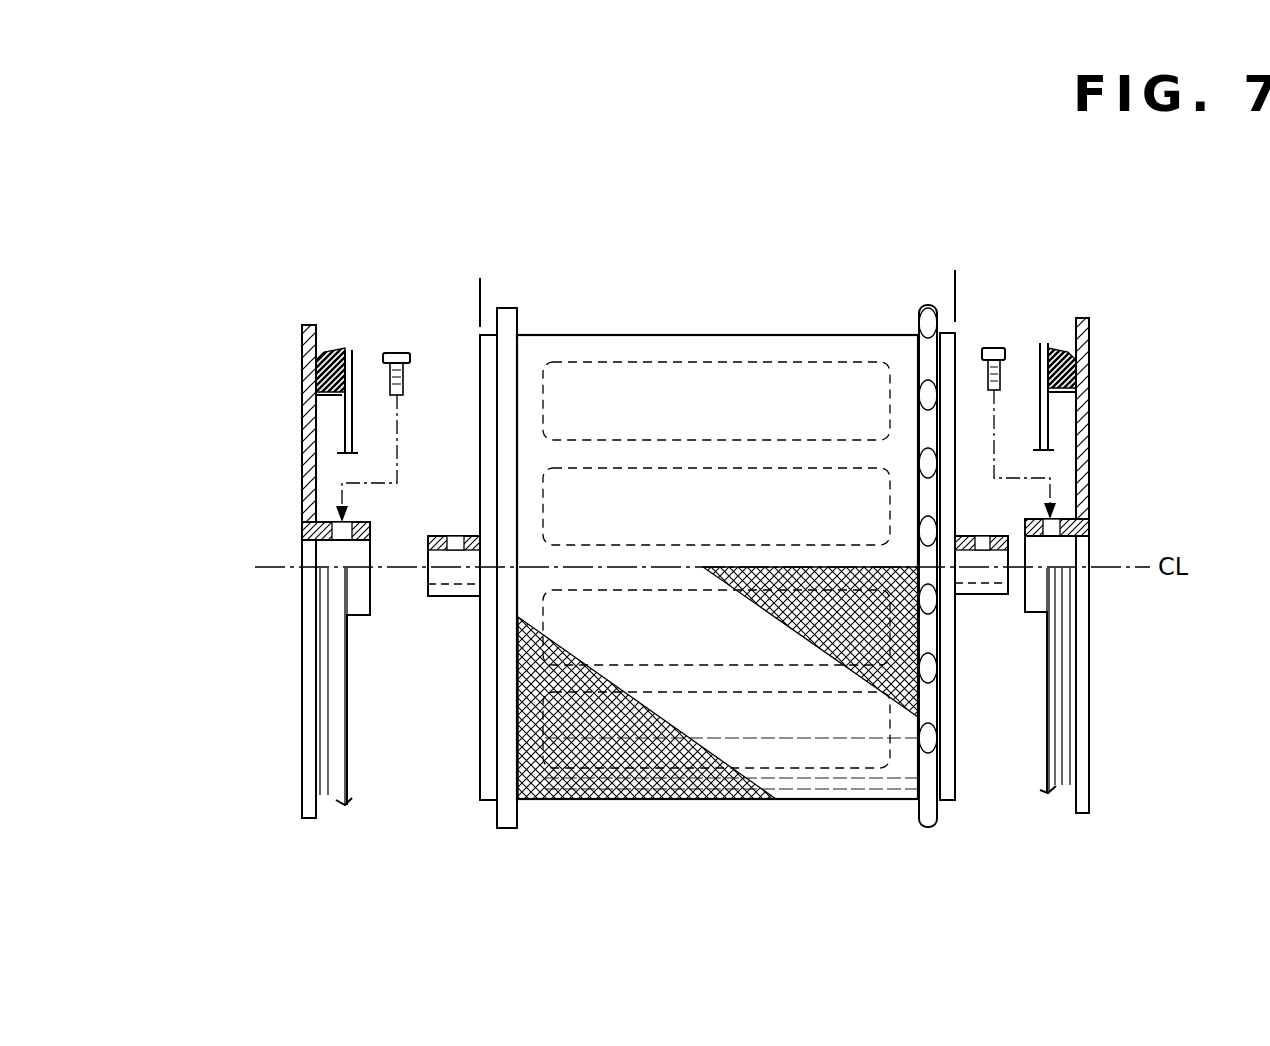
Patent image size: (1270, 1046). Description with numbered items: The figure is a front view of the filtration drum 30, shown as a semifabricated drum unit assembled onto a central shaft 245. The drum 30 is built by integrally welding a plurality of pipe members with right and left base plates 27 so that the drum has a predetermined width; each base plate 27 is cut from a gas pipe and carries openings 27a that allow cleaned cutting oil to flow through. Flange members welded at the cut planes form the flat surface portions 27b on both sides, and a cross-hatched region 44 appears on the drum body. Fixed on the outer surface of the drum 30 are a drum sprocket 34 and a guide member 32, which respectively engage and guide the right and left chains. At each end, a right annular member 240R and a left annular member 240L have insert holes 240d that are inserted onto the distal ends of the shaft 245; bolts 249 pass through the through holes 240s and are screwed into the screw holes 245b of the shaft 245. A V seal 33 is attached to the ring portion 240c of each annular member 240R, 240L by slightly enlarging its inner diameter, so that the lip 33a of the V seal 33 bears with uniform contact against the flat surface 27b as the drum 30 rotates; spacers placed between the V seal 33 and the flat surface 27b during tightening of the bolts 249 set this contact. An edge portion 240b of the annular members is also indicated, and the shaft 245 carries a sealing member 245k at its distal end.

The filtration drum 30 is at (756, 318).
The openings 27a is at (655, 468).
The cross-hatched area 44 is at (656, 800).
The guide member 32 is at (506, 830).
The flat surface portion 27b is at (480, 286).
The base plate 27 is at (957, 340).
The drum sprocket 34 is at (932, 304).
The shaft 245 is at (452, 598).
The screw holes 245b is at (455, 536).
The sealing member 245k is at (430, 578).
The left annular member 240L is at (292, 346).
The right annular member 240R is at (1097, 660).
The plate edge 240b is at (1090, 340).
The ring portion 240c is at (316, 395).
The V seal 33 is at (326, 358).
The lip 33a is at (350, 350).
The through holes 240s is at (335, 524).
The insert holes 240d is at (302, 548).
The bolts 249 is at (405, 380).